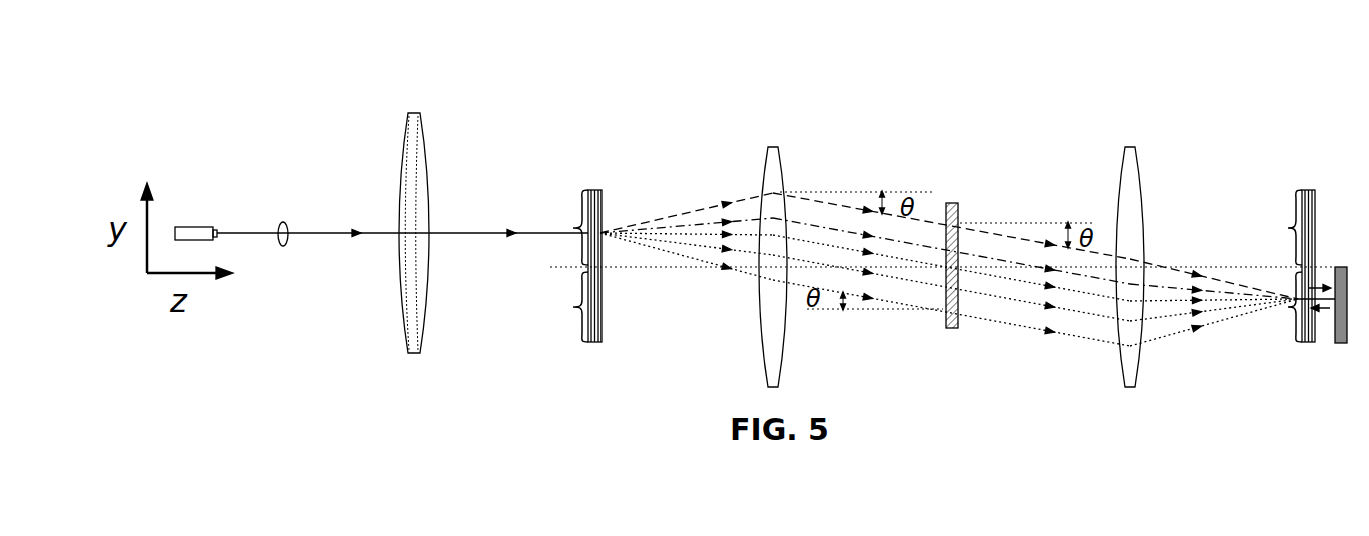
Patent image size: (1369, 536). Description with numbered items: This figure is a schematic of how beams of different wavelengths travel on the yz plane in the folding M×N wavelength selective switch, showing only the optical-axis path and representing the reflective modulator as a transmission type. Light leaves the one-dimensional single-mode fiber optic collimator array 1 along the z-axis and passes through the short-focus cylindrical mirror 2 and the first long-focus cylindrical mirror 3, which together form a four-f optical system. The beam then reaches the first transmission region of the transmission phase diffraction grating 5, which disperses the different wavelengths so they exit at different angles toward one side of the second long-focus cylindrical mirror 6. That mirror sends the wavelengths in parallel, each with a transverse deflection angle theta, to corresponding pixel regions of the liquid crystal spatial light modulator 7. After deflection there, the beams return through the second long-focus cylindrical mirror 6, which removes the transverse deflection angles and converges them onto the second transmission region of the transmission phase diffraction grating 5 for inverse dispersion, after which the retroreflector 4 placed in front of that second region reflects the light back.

The one-dimensional single-mode fiber optic collimator array 1 is at (194, 227).
The short-focus cylindrical mirror 2 is at (283, 222).
The first long-focus cylindrical mirror 3 is at (414, 113).
The retroreflector 4 is at (1341, 267).
The transmission phase diffraction grating 5 is at (594, 190).
The second long-focus cylindrical mirror 6 is at (773, 147).
The liquid crystal spatial light modulator 7 is at (952, 203).